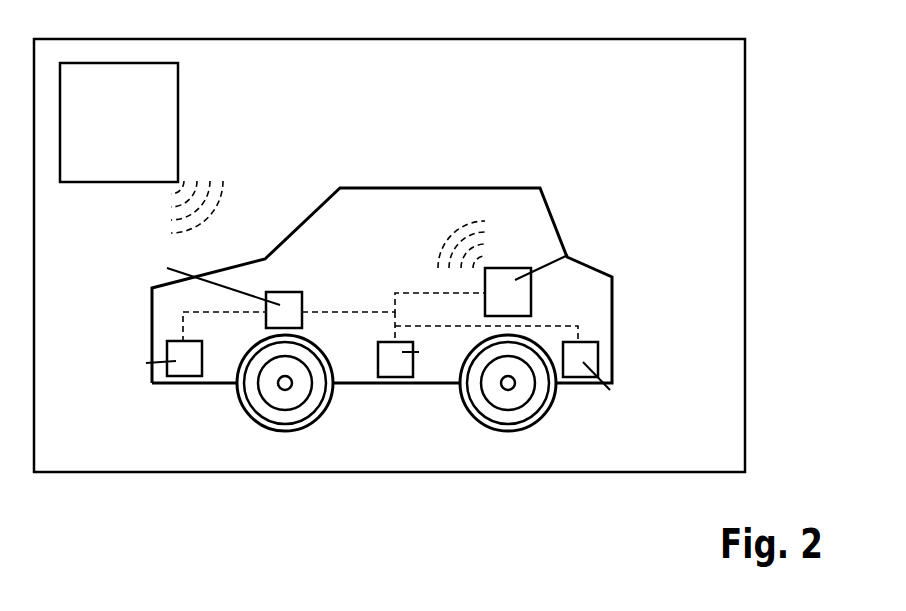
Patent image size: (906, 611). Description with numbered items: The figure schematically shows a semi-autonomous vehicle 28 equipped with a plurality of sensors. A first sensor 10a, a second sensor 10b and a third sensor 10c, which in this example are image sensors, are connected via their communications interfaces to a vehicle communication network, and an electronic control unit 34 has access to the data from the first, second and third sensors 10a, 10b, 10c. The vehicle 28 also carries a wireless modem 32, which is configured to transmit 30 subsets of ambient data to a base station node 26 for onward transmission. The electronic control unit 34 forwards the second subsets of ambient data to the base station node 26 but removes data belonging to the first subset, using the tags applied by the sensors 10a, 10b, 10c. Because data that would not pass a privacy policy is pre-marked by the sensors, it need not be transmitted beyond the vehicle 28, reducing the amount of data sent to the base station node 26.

The base station node 26 is at (179, 122).
The transmission 30 is at (221, 193).
The semi-autonomous vehicle 28 is at (613, 305).
The electronic control unit 34 is at (286, 292).
The wireless modem 32 is at (520, 268).
The first sensor 10a is at (183, 383).
The second sensor 10b is at (395, 383).
The third sensor 10c is at (580, 383).